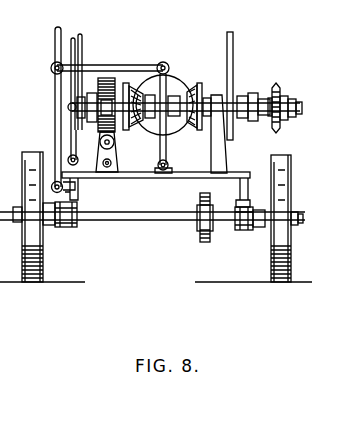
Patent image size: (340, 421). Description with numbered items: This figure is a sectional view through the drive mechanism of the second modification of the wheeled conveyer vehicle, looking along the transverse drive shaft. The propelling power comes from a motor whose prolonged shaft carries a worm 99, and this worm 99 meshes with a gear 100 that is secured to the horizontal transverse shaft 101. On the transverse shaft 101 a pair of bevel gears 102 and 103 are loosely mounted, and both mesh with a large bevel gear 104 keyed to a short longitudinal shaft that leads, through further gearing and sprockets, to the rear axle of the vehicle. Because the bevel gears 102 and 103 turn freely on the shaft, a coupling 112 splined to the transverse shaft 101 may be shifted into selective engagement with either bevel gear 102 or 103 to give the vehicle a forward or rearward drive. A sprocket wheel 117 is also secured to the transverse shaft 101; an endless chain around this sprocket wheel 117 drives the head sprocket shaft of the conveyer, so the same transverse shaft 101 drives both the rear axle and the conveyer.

The worm 99 is at (112, 161).
The gear 100 is at (101, 91).
The horizontal transverse shaft 101 is at (240, 102).
The bevel gear 102 is at (189, 88).
The bevel gear 103 is at (114, 143).
The large bevel gear 104 is at (174, 132).
The coupling 112 is at (173, 86).
The sprocket wheel 117 is at (281, 88).